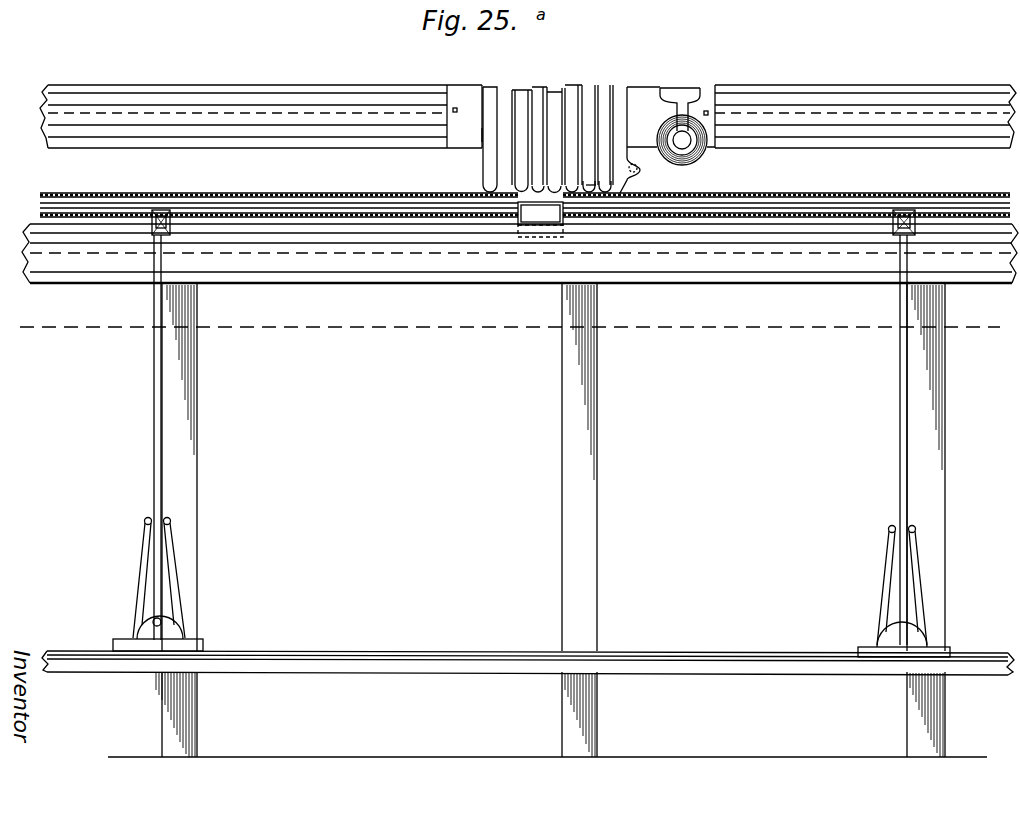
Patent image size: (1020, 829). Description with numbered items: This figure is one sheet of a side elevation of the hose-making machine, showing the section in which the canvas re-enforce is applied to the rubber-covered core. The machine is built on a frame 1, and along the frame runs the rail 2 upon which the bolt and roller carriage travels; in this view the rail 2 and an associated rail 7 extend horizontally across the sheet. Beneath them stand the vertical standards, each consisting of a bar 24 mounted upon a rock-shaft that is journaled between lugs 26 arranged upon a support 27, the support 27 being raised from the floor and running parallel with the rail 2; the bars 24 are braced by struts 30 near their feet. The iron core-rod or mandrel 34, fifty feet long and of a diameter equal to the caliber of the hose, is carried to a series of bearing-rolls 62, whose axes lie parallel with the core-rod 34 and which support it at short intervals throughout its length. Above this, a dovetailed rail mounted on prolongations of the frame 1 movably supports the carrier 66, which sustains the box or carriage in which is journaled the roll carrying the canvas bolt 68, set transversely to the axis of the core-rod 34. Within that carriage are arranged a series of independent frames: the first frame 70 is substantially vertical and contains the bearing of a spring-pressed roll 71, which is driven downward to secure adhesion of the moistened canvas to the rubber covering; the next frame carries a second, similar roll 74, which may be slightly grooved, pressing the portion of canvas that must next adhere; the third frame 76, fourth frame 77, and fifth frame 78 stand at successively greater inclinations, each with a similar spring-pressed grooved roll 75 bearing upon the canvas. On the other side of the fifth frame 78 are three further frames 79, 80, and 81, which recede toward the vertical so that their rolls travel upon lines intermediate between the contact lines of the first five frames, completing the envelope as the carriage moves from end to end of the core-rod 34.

The frame 1 is at (957, 387).
The rail 2 is at (710, 272).
The rail 7 is at (525, 199).
The bar 24 is at (517, 427).
The lugs 26 is at (131, 636).
The support 27 is at (680, 656).
The strut 30 is at (522, 581).
The core-rod or mandrel 34 is at (243, 200).
The bearing-rolls 62 is at (540, 219).
The carrier 66 is at (581, 139).
The canvas bolt 68 is at (640, 190).
The first frame 70 is at (622, 96).
The spring-pressed roll 71 is at (604, 184).
The second roll 74 is at (588, 184).
The spring-pressed grooved roll 75 is at (568, 184).
The third frame 76 is at (598, 90).
The fourth frame 77 is at (570, 108).
The fifth frame 78 is at (553, 100).
The frame 79 is at (518, 100).
The frame 80 is at (503, 153).
The frame 81 is at (483, 135).